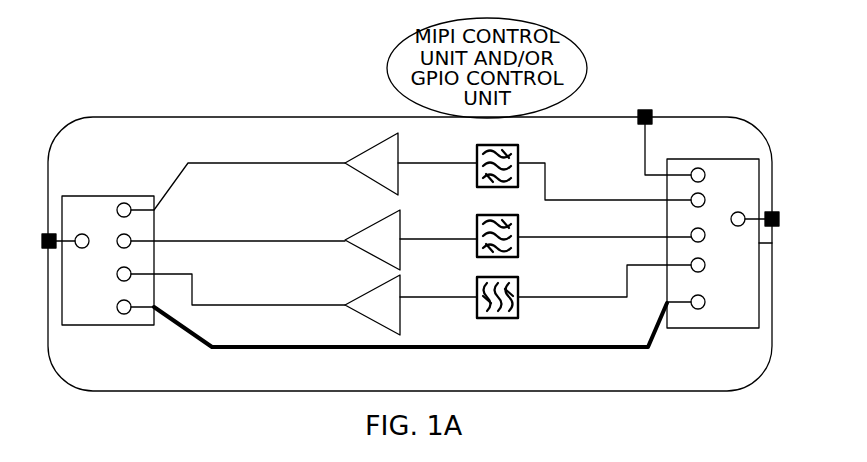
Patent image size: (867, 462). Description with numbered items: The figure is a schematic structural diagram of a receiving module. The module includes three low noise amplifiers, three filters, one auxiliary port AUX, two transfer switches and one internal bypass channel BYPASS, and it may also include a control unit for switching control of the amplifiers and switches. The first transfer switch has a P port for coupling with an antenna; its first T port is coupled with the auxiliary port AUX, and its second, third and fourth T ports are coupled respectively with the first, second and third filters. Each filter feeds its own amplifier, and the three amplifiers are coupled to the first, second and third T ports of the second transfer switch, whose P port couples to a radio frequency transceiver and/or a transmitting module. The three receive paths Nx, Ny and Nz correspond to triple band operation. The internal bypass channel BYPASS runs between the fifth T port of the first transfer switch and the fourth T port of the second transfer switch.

The first band receive path Nx is at (411, 166).
The second band receive path Ny is at (411, 236).
The third band receive path Nz is at (411, 300).
The internal Bypass channel BYPASS is at (410, 344).
The element AUX is at (673, 142).